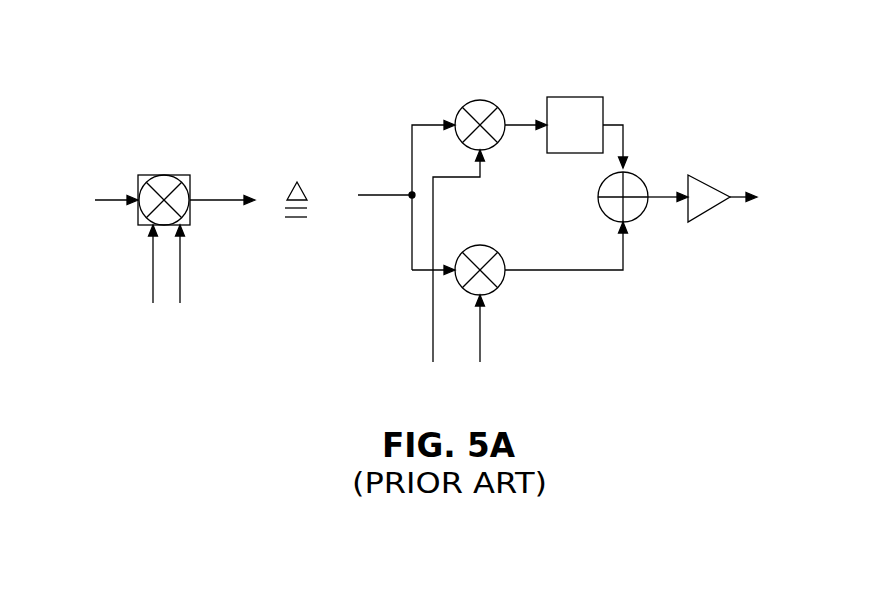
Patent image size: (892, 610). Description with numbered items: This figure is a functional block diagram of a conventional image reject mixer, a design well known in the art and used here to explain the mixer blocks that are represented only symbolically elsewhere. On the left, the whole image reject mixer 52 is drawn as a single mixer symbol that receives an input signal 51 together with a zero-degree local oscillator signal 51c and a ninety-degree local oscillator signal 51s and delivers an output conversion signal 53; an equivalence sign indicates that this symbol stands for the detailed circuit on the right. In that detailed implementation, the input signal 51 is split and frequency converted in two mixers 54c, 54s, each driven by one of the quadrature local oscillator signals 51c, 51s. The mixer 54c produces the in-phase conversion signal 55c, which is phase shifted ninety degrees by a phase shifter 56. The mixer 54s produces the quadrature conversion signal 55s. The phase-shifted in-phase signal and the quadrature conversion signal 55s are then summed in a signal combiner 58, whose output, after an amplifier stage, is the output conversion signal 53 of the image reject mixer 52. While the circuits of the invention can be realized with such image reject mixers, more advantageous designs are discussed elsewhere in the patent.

The input signal 51 is at (118, 198).
The mixer / modulator 52 is at (178, 175).
The output conversion signal 53 is at (231, 205).
The cosine (0 degree) local oscillator signal 51c is at (152, 292).
The sine (90 degree) local oscillator signal 51s is at (181, 290).
The mixer 54c is at (480, 99).
The mixer 54s is at (488, 243).
The in-phase conversion signal 55c is at (527, 133).
The quadrature conversion signal 55s is at (598, 273).
The phase shifter 56 is at (585, 97).
The signal combiner 58 is at (637, 218).